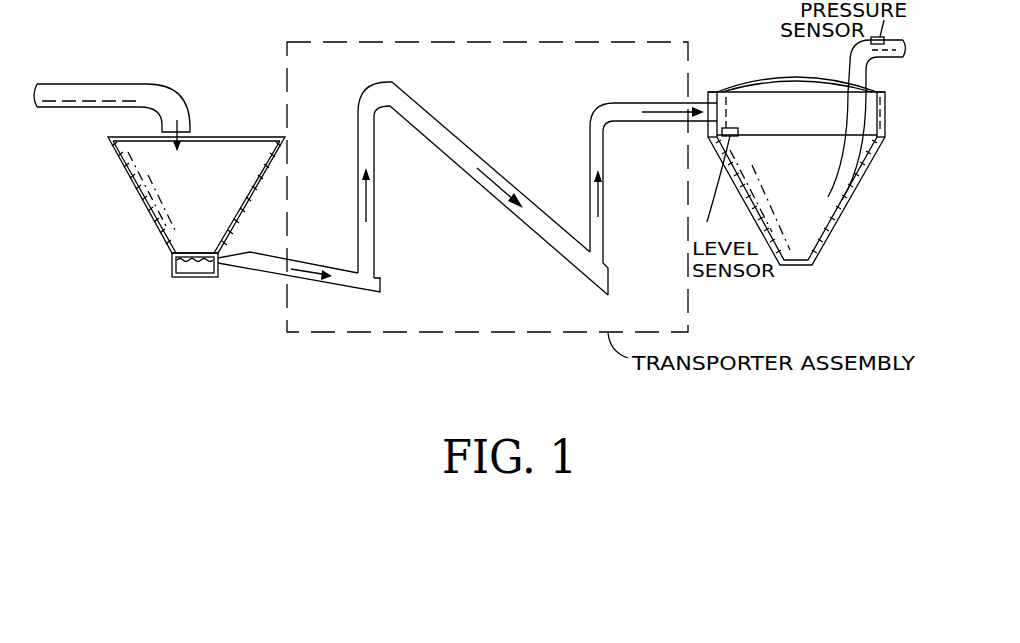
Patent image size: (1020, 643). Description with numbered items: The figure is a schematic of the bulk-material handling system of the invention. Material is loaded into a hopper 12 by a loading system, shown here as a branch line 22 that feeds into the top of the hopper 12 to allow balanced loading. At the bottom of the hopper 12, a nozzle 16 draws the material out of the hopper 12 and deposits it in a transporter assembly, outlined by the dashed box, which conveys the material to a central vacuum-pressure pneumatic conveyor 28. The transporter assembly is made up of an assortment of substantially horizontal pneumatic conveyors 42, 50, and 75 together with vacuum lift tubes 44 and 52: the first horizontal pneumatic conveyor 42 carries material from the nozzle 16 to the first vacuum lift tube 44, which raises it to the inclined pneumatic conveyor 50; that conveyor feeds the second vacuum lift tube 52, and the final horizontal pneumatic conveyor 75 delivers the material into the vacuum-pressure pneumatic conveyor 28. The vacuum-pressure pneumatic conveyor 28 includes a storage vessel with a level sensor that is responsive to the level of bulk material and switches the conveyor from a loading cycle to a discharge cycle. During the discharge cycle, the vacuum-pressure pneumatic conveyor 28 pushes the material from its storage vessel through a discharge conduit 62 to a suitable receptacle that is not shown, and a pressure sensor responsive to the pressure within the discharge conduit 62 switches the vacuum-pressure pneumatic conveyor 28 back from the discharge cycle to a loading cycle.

The hopper 12 is at (166, 230).
The nozzle 16 is at (239, 266).
The branch line 22 is at (165, 104).
The vacuum-pressure pneumatic conveyor 28 is at (840, 229).
The horizontal pneumatic conveyor 42 is at (297, 265).
The vacuum lift tube 44 is at (373, 204).
The horizontal pneumatic conveyor 50 is at (473, 160).
The vacuum lift tube 52 is at (600, 239).
The discharge conduit 62 is at (884, 56).
The horizontal pneumatic conveyor 75 is at (660, 108).